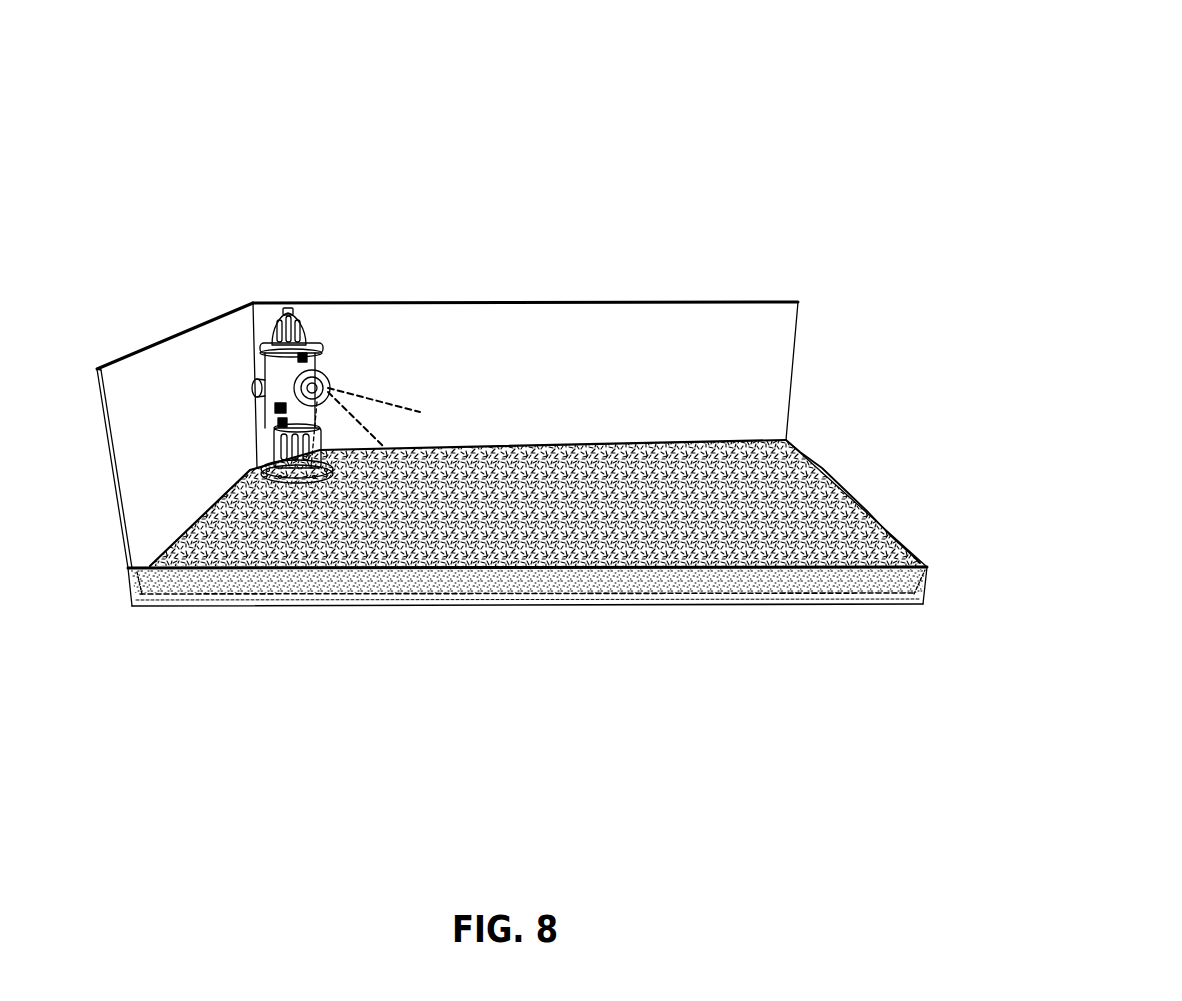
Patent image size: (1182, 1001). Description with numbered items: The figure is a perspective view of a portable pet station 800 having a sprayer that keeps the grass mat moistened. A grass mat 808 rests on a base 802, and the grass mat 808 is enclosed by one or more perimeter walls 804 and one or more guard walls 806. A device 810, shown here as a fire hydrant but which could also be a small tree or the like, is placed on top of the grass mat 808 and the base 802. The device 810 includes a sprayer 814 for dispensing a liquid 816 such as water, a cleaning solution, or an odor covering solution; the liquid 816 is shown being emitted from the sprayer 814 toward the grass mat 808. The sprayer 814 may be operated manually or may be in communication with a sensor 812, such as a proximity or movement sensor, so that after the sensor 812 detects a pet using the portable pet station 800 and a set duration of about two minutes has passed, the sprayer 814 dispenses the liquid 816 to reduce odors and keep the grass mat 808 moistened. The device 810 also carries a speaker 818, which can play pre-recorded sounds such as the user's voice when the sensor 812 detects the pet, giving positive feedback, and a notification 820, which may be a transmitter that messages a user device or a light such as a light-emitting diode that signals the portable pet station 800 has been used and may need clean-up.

The portable pet station 800 is at (1078, 63).
The base 802 is at (665, 598).
The perimeter wall 804 is at (928, 581).
The guard wall 806 is at (742, 319).
The grass mat 808 is at (487, 542).
The device 810 is at (308, 330).
The sensor 812 is at (303, 358).
The sprayer 814 is at (323, 390).
The liquid 816 is at (385, 403).
The speaker 818 is at (278, 430).
The notification 820 is at (277, 410).